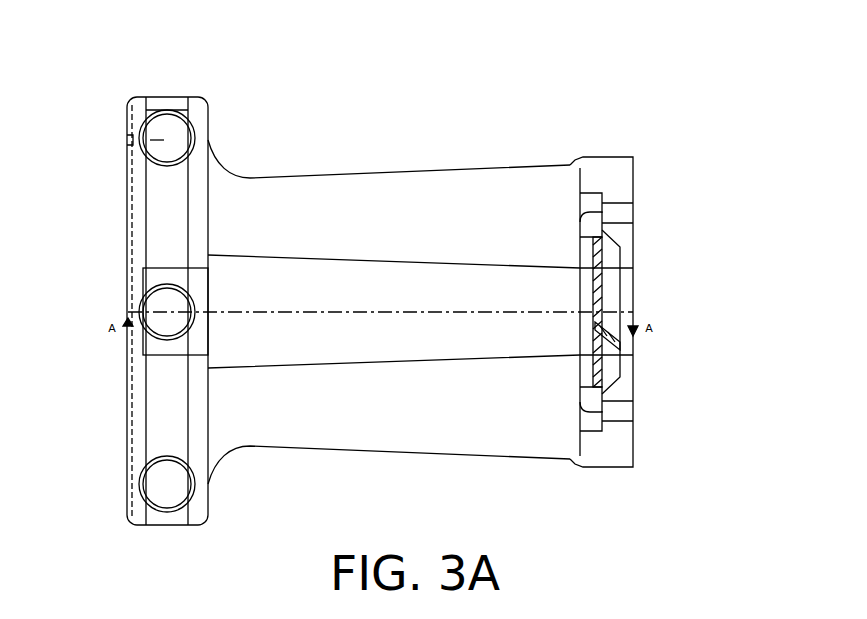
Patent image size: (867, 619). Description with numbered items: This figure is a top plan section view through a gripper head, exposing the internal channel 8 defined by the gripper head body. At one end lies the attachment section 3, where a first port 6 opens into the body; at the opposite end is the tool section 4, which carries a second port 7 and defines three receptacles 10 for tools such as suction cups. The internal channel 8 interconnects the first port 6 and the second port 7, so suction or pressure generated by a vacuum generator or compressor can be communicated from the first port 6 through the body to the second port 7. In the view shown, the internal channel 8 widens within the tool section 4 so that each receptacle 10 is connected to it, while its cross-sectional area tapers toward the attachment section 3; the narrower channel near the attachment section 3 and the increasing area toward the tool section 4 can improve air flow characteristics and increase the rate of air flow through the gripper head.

The attachment section 3 is at (633, 212).
The tool section 4 is at (140, 433).
The first port 6 is at (636, 343).
The second port 7 is at (128, 140).
The internal channel 8 is at (430, 290).
The receptacle 10 is at (158, 140).